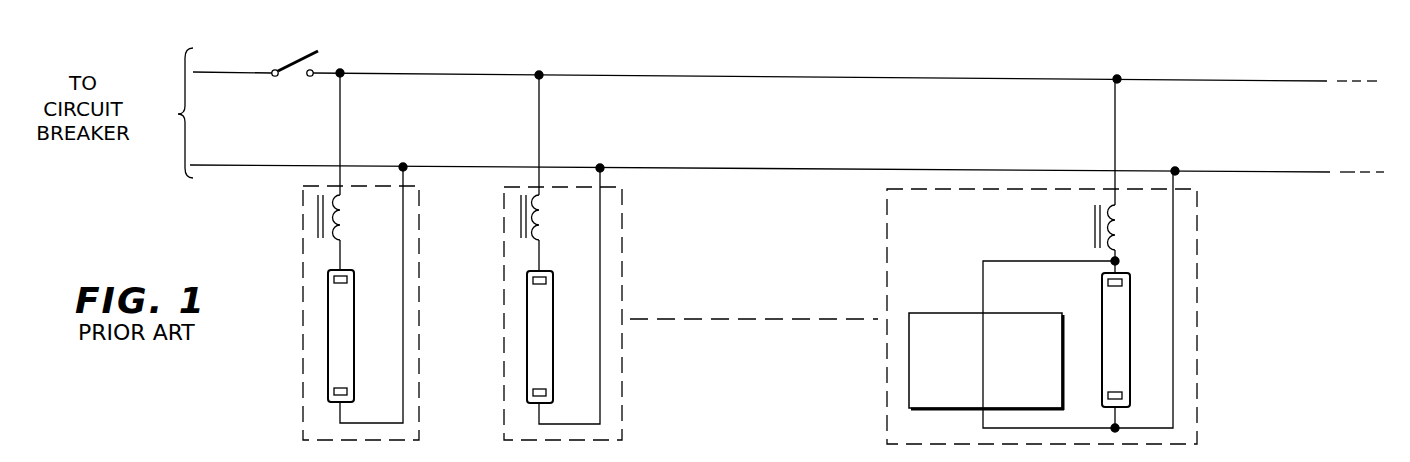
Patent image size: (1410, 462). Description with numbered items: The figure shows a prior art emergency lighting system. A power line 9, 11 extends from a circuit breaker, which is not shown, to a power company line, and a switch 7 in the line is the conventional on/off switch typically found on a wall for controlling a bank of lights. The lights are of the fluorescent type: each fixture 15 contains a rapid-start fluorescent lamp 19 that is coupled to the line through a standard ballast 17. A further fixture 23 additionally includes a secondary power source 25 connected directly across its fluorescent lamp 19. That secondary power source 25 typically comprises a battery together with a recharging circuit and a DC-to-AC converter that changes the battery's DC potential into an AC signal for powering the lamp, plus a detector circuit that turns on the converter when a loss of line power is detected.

The switch 7 is at (295, 56).
The power line 9 is at (244, 68).
The power line 11 is at (219, 162).
The fixture 15 is at (301, 290).
The ballast 17 is at (342, 219).
The fluorescent lamp 19 is at (355, 350).
The fixture 23 is at (881, 356).
The secondary power source 25 is at (1013, 313).